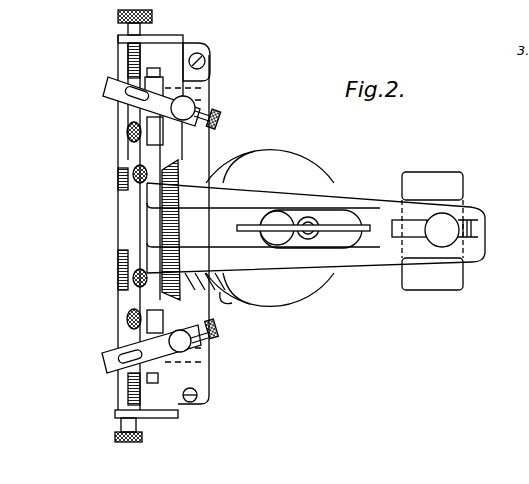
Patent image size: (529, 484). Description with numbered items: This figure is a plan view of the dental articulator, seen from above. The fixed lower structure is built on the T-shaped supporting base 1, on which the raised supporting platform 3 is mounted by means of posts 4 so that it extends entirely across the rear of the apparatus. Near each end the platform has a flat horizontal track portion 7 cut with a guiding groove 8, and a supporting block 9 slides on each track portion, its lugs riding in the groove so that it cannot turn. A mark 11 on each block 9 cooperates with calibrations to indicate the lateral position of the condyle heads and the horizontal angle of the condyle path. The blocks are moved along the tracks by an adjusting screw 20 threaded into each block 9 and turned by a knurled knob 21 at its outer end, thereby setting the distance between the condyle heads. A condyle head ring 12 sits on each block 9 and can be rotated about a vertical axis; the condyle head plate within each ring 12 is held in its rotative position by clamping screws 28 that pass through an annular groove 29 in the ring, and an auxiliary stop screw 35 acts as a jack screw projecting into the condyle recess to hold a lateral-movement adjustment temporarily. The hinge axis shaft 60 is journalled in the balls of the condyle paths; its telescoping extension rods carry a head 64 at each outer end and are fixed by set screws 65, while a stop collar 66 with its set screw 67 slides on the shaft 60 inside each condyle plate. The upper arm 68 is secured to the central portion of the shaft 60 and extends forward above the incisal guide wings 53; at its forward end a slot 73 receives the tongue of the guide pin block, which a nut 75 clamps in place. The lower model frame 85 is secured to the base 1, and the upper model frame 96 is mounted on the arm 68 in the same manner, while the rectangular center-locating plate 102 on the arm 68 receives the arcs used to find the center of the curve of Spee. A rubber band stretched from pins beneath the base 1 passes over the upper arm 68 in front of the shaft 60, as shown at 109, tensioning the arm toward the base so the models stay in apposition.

The supporting base 1 is at (188, 140).
The raised supporting platform 3 is at (182, 55).
The post 4 is at (206, 62).
The flat horizontal track portion 7 is at (132, 226).
The guiding groove 8 is at (188, 142).
The supporting block 9 is at (172, 85).
The mark 11 is at (117, 410).
The condyle head ring 12 is at (118, 88).
The adjusting screw 20 is at (118, 55).
The knurled knob 21 is at (115, 438).
The clamping screw 28 is at (205, 97).
The annular groove 29 is at (125, 107).
The auxiliary stop screw 35 is at (216, 114).
The guide wing 53 is at (437, 180).
The hinge axis shaft 60 is at (194, 131).
The head 64 is at (155, 72).
The set screw 65 is at (133, 174).
The stop collar 66 is at (155, 320).
The set screw 67 is at (131, 133).
The upper arm 68 is at (302, 198).
The slot 73 is at (415, 222).
The nut 75 is at (440, 237).
The lower model frame 85 is at (232, 303).
The upper model frame 96 is at (273, 170).
The center-locating plate 102 is at (332, 230).
The rubber band portion 109 is at (160, 230).